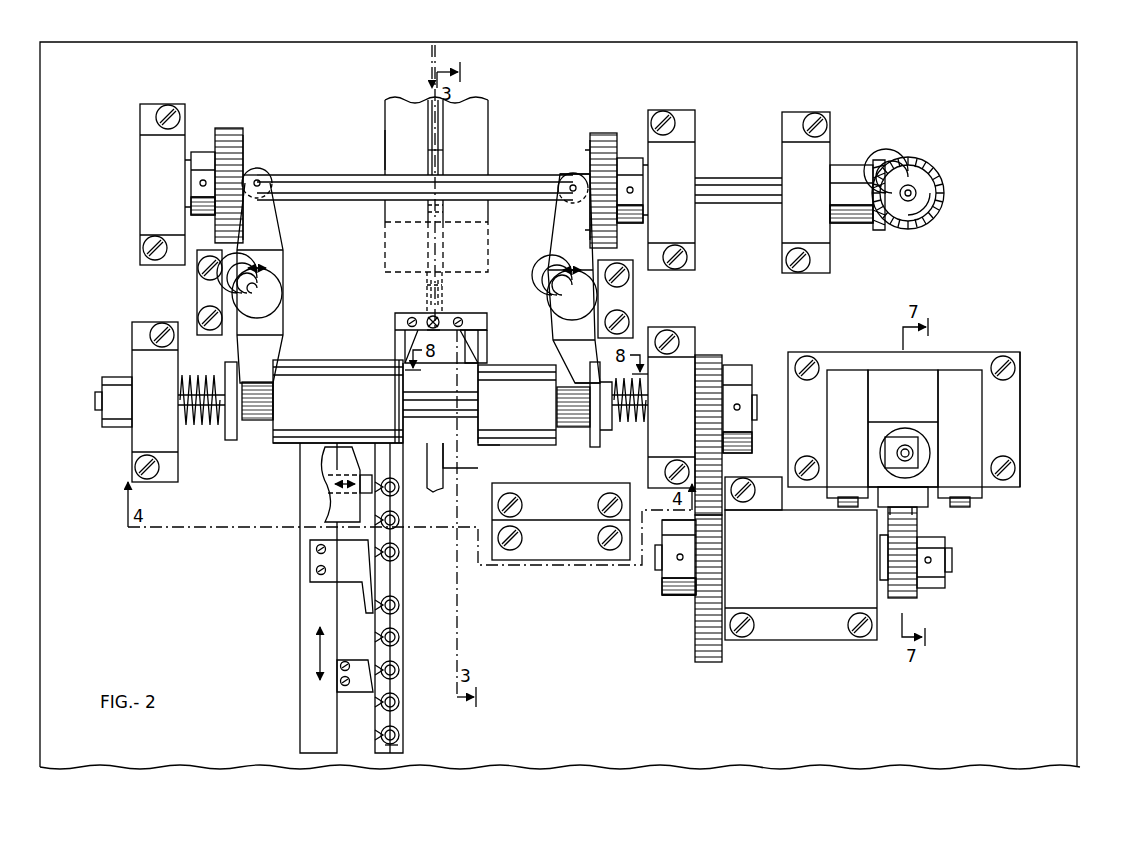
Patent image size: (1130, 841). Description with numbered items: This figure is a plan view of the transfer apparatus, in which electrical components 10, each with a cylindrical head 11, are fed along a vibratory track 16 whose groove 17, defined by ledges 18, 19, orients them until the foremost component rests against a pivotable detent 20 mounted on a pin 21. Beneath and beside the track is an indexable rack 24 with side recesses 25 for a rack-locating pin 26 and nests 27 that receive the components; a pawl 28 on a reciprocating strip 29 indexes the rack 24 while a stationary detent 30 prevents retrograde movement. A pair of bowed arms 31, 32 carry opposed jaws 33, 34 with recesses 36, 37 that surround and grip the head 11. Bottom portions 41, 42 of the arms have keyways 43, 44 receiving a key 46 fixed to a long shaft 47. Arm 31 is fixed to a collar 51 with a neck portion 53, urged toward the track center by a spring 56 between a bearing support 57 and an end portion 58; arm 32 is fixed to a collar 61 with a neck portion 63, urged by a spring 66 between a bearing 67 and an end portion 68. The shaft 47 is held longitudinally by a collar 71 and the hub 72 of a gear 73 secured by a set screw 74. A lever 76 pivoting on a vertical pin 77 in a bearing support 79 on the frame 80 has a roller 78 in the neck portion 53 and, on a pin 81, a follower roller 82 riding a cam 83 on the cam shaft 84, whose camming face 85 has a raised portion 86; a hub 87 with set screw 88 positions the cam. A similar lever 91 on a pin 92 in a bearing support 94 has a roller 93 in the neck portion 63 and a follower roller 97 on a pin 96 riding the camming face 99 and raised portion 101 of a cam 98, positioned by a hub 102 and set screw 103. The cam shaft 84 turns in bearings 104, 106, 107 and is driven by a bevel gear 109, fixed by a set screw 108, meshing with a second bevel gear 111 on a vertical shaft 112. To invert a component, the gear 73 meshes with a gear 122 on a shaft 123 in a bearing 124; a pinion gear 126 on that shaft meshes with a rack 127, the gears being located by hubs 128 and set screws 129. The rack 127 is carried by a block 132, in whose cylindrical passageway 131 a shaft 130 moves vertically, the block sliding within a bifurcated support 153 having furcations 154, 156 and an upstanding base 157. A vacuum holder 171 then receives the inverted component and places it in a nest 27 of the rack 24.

The electrical component 10 is at (430, 270).
The cylindrical head 11 is at (430, 326).
The vibratory track 16 is at (383, 148).
The groove 17 is at (400, 150).
The ledge 18 is at (420, 120).
The ledge 19 is at (466, 115).
The pivotable detent 20 is at (427, 305).
The pin 21 is at (446, 300).
The indexable rack 24 is at (400, 680).
The recesses 25 is at (395, 737).
The rack-locating pin 26 is at (381, 487).
The nests 27 is at (392, 606).
The pawl 28 is at (365, 596).
The reciprocating strip 29 is at (300, 620).
The stationary detent 30 is at (340, 694).
The arm 31 is at (487, 345).
The arm 32 is at (395, 320).
The jaw 33 is at (487, 326).
The jaw 34 is at (417, 332).
The semicircular recess 36 is at (440, 320).
The recess 37 is at (445, 337).
The bottom portion 41 is at (460, 422).
The bottom portion 42 is at (396, 382).
The keyway 43 is at (483, 412).
The keyway 44 is at (395, 412).
The key 46 is at (492, 447).
The long shaft 47 is at (198, 385).
The collar 51 is at (530, 448).
The neck portion 53 is at (576, 428).
The spring 56 is at (628, 432).
The bearing support 57 is at (688, 372).
The end portion 58 is at (595, 447).
The collar 61 is at (300, 432).
The neck portion 63 is at (264, 422).
The spring 66 is at (190, 425).
The bearing 67 is at (140, 440).
The end portion 68 is at (231, 440).
The collar 71 is at (104, 427).
The hub 72 is at (752, 390).
The gear 73 is at (722, 356).
The set screw 74 is at (740, 410).
The lever 76 is at (556, 238).
The vertical pin 77 is at (548, 292).
The roller 78 is at (585, 383).
The bearing support 79 is at (633, 300).
The frame 80 is at (1045, 374).
The pin 81 is at (570, 191).
The follower roller 82 is at (568, 174).
The cam 83 is at (603, 133).
The cam shaft 84 is at (740, 203).
The camming face 85 is at (590, 140).
The raised portion 86 is at (588, 160).
The hub 87 is at (630, 172).
The set screw 88 is at (629, 194).
The lever 91 is at (270, 228).
The pin 92 is at (280, 293).
The roller 93 is at (257, 382).
The bearing support 94 is at (197, 292).
The pin 96 is at (266, 180).
The follower roller 97 is at (259, 180).
The cam 98 is at (226, 128).
The camming face 99 is at (244, 140).
The raised portion 101 is at (244, 168).
The hub 102 is at (200, 152).
The set screw 103 is at (203, 186).
The bearing 104 is at (143, 212).
The bearing 106 is at (695, 150).
The bearing 107 is at (834, 135).
The set screw 108 is at (853, 190).
The bevel gear 109 is at (880, 230).
The second bevel gear 111 is at (945, 205).
The vertical shaft 112 is at (915, 188).
The gear 122 is at (697, 632).
The shaft 123 is at (660, 562).
The bearing 124 is at (795, 635).
The pinion gear 126 is at (915, 593).
The rack 127 is at (915, 520).
The hubs 128 is at (950, 557).
The set screws 129 is at (930, 562).
The shaft 130 is at (905, 444).
The cylindrical passageway 131 is at (915, 450).
The block 132 is at (892, 455).
The bifurcated support 153 is at (942, 348).
The furcation 154 is at (965, 380).
The furcation 156 is at (847, 380).
The upstanding base 157 is at (888, 368).
The vacuum chuck or holder 171 is at (433, 496).